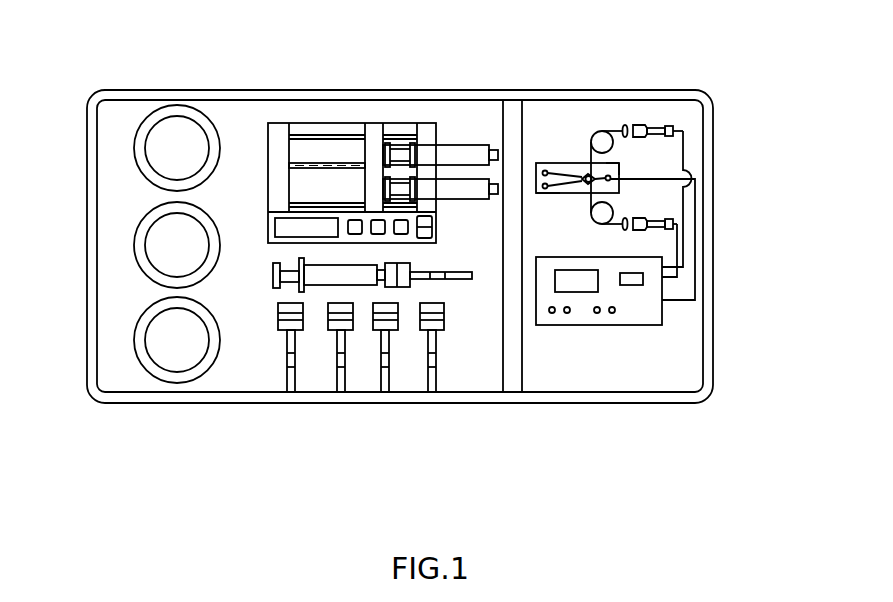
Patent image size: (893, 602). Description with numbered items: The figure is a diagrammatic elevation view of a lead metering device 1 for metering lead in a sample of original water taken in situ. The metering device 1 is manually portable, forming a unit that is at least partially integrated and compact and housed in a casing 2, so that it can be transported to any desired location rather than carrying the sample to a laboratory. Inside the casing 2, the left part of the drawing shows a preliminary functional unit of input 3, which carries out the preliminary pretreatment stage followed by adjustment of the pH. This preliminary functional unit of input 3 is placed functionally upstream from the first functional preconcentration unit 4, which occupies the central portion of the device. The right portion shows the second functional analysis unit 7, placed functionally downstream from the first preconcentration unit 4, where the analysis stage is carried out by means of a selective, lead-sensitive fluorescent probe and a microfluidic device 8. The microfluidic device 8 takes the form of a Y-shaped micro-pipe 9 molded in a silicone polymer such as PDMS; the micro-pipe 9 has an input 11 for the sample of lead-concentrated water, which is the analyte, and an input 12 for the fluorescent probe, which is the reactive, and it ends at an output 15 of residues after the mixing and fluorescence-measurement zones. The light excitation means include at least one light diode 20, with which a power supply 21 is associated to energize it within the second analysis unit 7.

The metering device 1 is at (268, 424).
The casing 2 is at (87, 362).
The preliminary functional unit of input 3 is at (118, 355).
The first functional preconcentration unit 4 is at (482, 360).
The second functional analysis unit 7 is at (628, 235).
The microfluidic device 8 is at (624, 117).
The Y-shaped micro-pipe 9 is at (560, 177).
The input for the sample of lead-concentrated water 11 is at (550, 193).
The input for the fluorescent probe 12 is at (545, 170).
The output of residues 15 is at (617, 167).
The light diode 20 is at (636, 124).
The power supply 21 is at (652, 308).